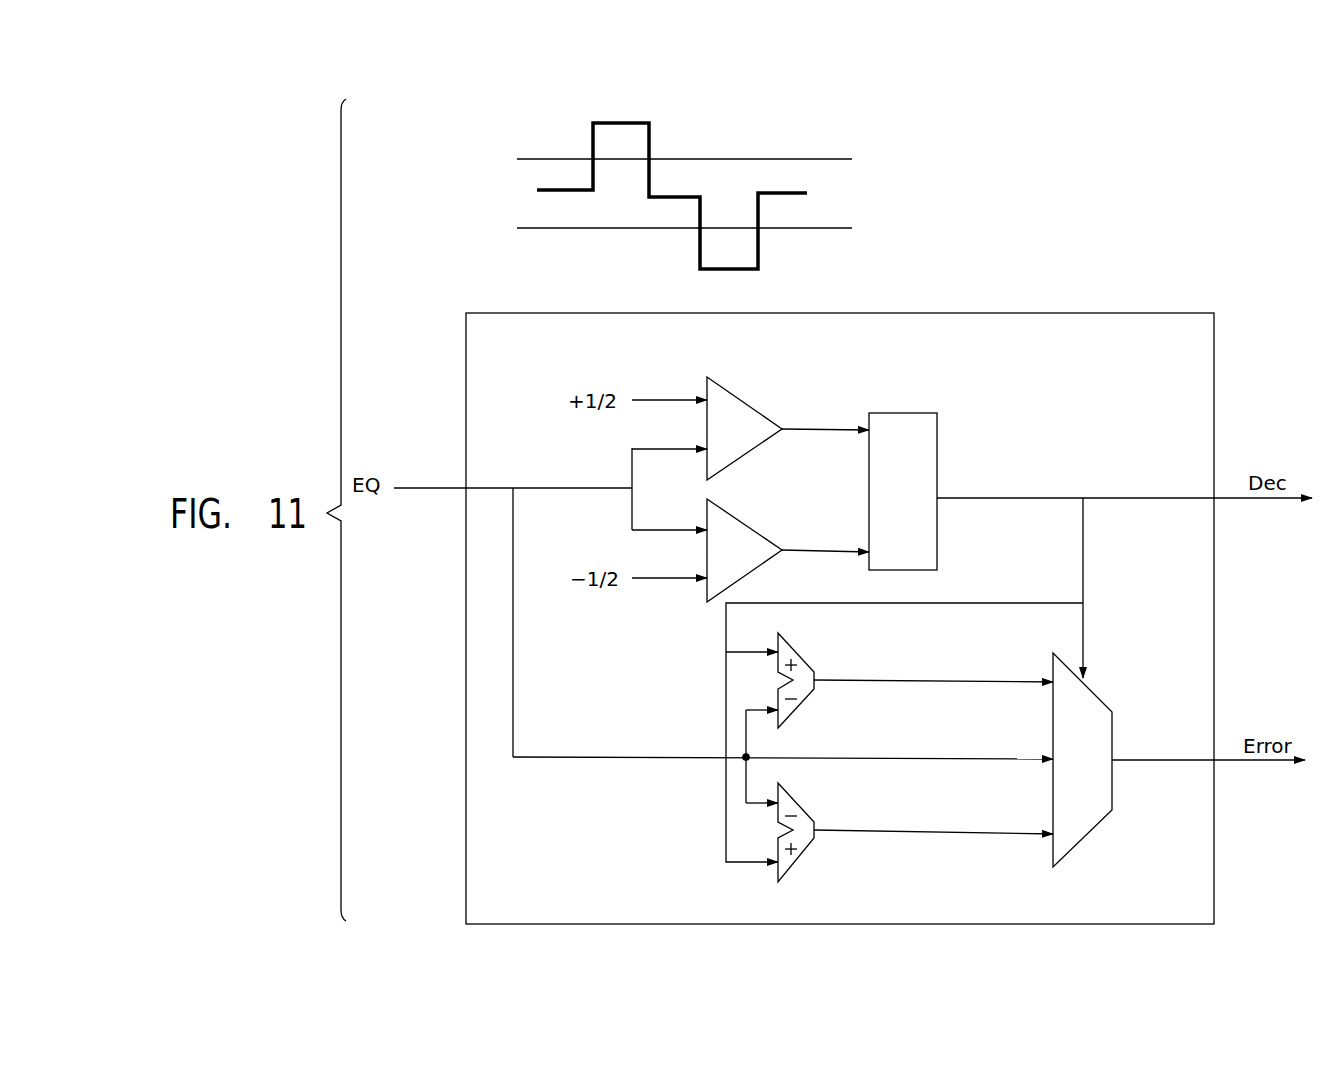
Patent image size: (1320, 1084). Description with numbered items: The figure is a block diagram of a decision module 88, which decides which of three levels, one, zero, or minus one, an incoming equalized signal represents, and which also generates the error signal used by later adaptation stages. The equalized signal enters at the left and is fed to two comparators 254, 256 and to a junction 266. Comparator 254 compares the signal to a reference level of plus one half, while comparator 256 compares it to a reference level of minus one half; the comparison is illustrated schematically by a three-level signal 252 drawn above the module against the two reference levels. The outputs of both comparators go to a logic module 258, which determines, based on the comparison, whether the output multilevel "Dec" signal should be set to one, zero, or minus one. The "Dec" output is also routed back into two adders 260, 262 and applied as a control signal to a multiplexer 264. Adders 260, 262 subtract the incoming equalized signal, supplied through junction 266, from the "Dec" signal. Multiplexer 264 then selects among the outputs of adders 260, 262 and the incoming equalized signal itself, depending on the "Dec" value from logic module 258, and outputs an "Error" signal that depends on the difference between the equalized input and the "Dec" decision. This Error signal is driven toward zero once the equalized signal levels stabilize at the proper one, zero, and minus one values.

The decision module 88 is at (1150, 234).
The signal 252 is at (788, 152).
The comparator 254 is at (728, 397).
The comparator 256 is at (733, 523).
The logic module 258 is at (928, 462).
The adder 260 is at (789, 648).
The adder 262 is at (789, 801).
The multiplexer 264 is at (1088, 697).
The junction 266 is at (744, 760).